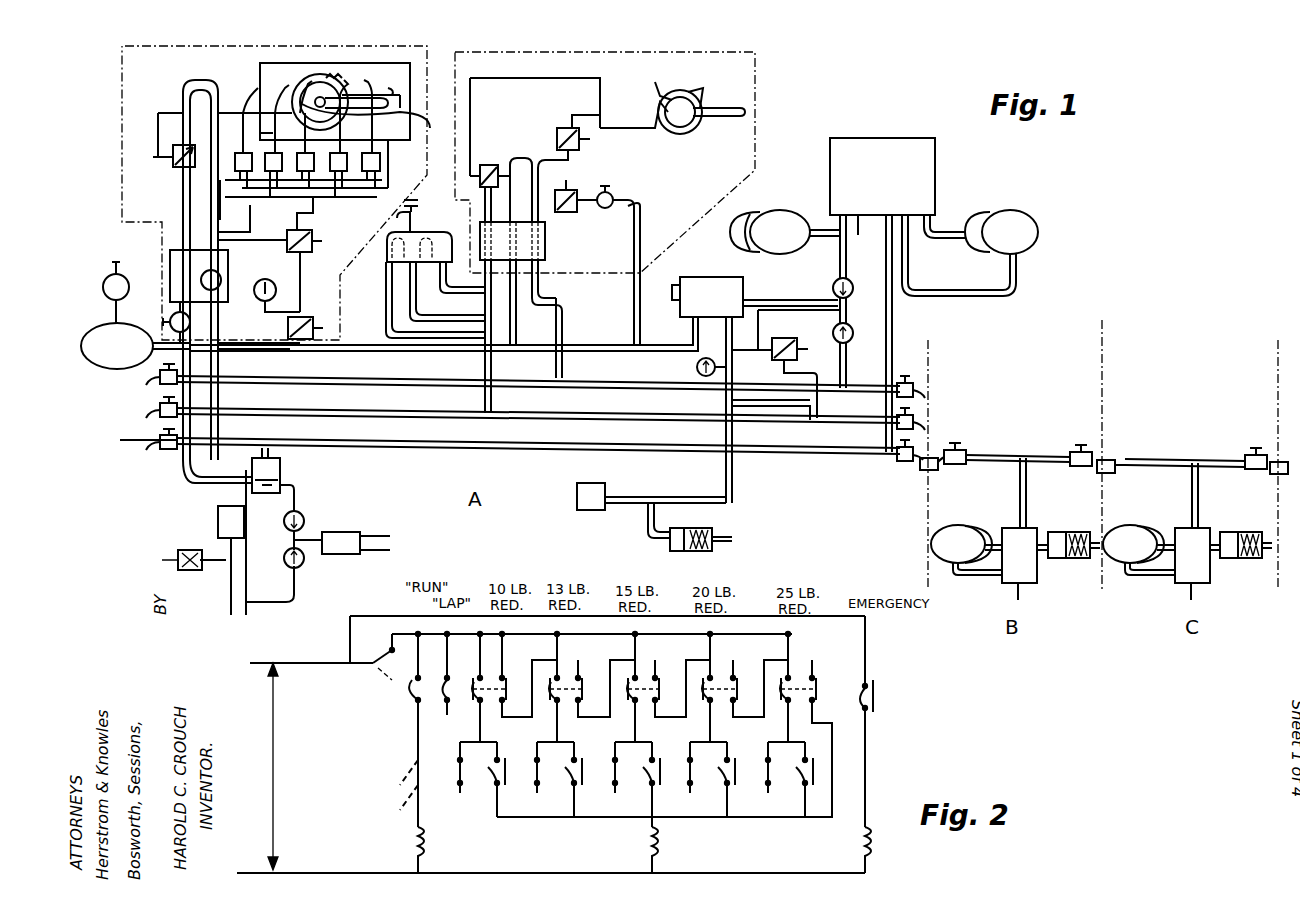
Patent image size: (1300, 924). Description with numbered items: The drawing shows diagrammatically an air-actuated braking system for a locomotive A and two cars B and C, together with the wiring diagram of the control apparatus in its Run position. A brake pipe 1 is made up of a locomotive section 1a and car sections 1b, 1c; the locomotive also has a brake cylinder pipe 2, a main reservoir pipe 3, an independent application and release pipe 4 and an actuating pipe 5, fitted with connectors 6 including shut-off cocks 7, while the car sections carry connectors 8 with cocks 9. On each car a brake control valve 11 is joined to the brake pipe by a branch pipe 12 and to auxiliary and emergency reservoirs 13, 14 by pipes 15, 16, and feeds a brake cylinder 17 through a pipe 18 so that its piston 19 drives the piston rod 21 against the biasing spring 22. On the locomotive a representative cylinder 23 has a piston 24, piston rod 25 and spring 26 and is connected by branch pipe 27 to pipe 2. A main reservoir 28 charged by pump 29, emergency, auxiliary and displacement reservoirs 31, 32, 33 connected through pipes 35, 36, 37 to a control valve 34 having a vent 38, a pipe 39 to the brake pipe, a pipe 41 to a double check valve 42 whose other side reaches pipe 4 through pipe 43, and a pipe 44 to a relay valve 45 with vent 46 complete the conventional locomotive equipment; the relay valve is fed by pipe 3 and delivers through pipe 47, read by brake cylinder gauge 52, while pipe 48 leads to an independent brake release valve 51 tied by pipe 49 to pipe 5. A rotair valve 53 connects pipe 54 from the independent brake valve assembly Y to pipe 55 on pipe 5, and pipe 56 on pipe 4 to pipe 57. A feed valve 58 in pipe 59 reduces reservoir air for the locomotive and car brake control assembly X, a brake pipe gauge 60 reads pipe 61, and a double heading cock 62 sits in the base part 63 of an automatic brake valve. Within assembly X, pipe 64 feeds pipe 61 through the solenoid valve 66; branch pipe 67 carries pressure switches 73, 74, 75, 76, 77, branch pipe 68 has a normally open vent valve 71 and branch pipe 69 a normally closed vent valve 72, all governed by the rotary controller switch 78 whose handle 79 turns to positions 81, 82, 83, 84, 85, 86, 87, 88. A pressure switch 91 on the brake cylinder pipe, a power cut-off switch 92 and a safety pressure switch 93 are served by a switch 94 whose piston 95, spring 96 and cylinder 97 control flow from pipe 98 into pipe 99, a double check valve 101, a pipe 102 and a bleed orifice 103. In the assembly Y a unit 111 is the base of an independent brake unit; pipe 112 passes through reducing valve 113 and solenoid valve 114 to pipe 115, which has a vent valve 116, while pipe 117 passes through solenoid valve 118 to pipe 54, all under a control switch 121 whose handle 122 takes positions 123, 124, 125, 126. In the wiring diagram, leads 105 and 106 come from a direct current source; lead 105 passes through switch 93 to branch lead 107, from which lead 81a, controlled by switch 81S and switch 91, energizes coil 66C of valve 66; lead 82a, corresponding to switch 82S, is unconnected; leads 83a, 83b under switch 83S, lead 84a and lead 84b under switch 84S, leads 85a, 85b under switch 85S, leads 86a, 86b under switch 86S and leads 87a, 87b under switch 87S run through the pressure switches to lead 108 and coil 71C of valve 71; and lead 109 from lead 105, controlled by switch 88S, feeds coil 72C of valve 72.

In FIG. 1, the brake pipe 1 is at (450, 452).
In FIG. 1, the brake pipe section 1a is at (536, 448).
In FIG. 1, the brake pipe section 1b is at (1008, 456).
In FIG. 1, the brake pipe section 1c is at (1186, 462).
In FIG. 1, the pipe 2 is at (680, 496).
In FIG. 1, the main reservoir pipe 3 is at (604, 352).
In FIG. 1, the pipe 4 is at (612, 384).
In FIG. 1, the pipe 5 is at (636, 418).
In FIG. 1, the hose 6 is at (146, 384).
In FIG. 1, the cut-out cock 7 is at (180, 386).
In FIG. 1, the hose coupling 8 is at (950, 466).
In FIG. 1, the angle cock 9 is at (966, 450).
In FIG. 1, the exhaust 11 is at (1024, 586).
In FIG. 1, the branch pipe 12 is at (1020, 490).
In FIG. 1, the auxiliary reservoir 13 is at (945, 548).
In FIG. 1, the triple valve 14 is at (1000, 536).
In FIG. 1, the pipe 15 is at (958, 576).
In FIG. 1, the pipe 16 is at (985, 560).
In FIG. 1, the brake cylinder 17 is at (1068, 560).
In FIG. 1, the pipe 18 is at (1046, 540).
In FIG. 1, the piston 19 is at (1060, 556).
In FIG. 1, the piston rod 21 is at (1096, 550).
In FIG. 1, the spring 22 is at (1076, 532).
In FIG. 1, the cylinder 23 is at (680, 552).
In FIG. 1, the piston 24 is at (688, 528).
In FIG. 1, the rod 25 is at (728, 536).
In FIG. 1, the spring 26 is at (704, 552).
In FIG. 1, the pipe 27 is at (645, 530).
In FIG. 1, the reservoir 28 is at (108, 362).
In FIG. 1, the pressure gauge 29 is at (104, 280).
In FIG. 1, the reservoir 31 is at (1030, 212).
In FIG. 1, the reservoir 32 is at (978, 212).
In FIG. 1, the reservoir 33 is at (776, 210).
In FIG. 1, the compressor 34 is at (884, 138).
In FIG. 1, the pipe 35 is at (975, 296).
In FIG. 1, the pipe 36 is at (940, 238).
In FIG. 1, the pipe 37 is at (816, 236).
In FIG. 1, the exhaust 38 is at (872, 215).
In FIG. 1, the pipe 39 is at (893, 316).
In FIG. 1, the pipe 41 is at (847, 254).
In FIG. 1, the check valve 42 is at (848, 292).
In FIG. 1, the check valve 43 is at (846, 344).
In FIG. 1, the pipe 44 is at (790, 296).
In FIG. 1, the brake valve 45 is at (706, 277).
In FIG. 1, the exhaust 46 is at (672, 300).
In FIG. 1, the pipe 47 is at (736, 462).
In FIG. 1, the pipe 48 is at (768, 322).
In FIG. 1, the pipe 49 is at (812, 400).
In FIG. 1, the valve 51 is at (775, 360).
In FIG. 1, the check valve 52 is at (697, 368).
In FIG. 1, the valve 53 is at (394, 266).
In FIG. 1, the pipe 54 is at (395, 297).
In FIG. 1, the pipe 55 is at (388, 318).
In FIG. 1, the pipe 56 is at (550, 328).
In FIG. 1, the pipe 57 is at (548, 290).
In FIG. 1, the valve 58 is at (172, 314).
In FIG. 1, the stem 59 is at (163, 322).
In FIG. 1, the check valve 60 is at (268, 279).
In FIG. 1, the pipe 61 is at (220, 360).
In FIG. 1, the valve 62 is at (221, 278).
In FIG. 1, the valve body 63 is at (170, 266).
In FIG. 1, the pipe 64 is at (200, 80).
In FIG. 1, the magnet valve 66 is at (176, 170).
In FIG. 1, the wiring 67 is at (226, 196).
In FIG. 1, the pipe 68 is at (250, 240).
In FIG. 1, the pipe 69 is at (262, 349).
In FIG. 1, the magnet valve 71 is at (308, 252).
In FIG. 1, the magnet valve 72 is at (300, 340).
In FIG. 1, the relay 73 is at (236, 153).
In FIG. 2, the relay 73 is at (497, 816).
In FIG. 1, the relay 74 is at (268, 158).
In FIG. 2, the relay 74 is at (574, 816).
In FIG. 1, the relay 75 is at (302, 158).
In FIG. 2, the relay 75 is at (652, 816).
In FIG. 1, the relay 76 is at (336, 158).
In FIG. 2, the relay 76 is at (727, 816).
In FIG. 1, the relay 77 is at (382, 162).
In FIG. 2, the relay 77 is at (805, 816).
In FIG. 1, the controller drum 78 is at (338, 114).
In FIG. 1, the lead 79 is at (430, 128).
In FIG. 1, the controller 81 is at (300, 110).
In FIG. 1, the contact 82 is at (250, 92).
In FIG. 1, the contact 83 is at (290, 88).
In FIG. 1, the contact 84 is at (300, 82).
In FIG. 1, the contact 85 is at (334, 76).
In FIG. 1, the contact 86 is at (350, 90).
In FIG. 1, the contact 87 is at (372, 92).
In FIG. 1, the contact 88 is at (380, 106).
In FIG. 1, the valve 91 is at (594, 483).
In FIG. 2, the valve 91 is at (412, 770).
In FIG. 1, the valve 92 is at (342, 538).
In FIG. 1, the valve 93 is at (218, 512).
In FIG. 2, the valve 93 is at (384, 660).
In FIG. 1, the valve 94 is at (282, 476).
In FIG. 1, the pipe 95 is at (256, 470).
In FIG. 1, the port 96 is at (266, 494).
In FIG. 1, the port 97 is at (280, 463).
In FIG. 1, the pipe 98 is at (184, 478).
In FIG. 1, the pipe 99 is at (300, 496).
In FIG. 1, the pipe 101 is at (288, 544).
In FIG. 1, the pipe 102 is at (230, 570).
In FIG. 1, the valve 103 is at (188, 550).
In FIG. 2, the conductor 105 is at (304, 670).
In FIG. 2, the conductor 106 is at (320, 873).
In FIG. 2, the conductor 107 is at (400, 622).
In FIG. 2, the conductor 108 is at (670, 819).
In FIG. 2, the conductor 109 is at (866, 650).
In FIG. 1, the valve 111 is at (545, 246).
In FIG. 1, the pipe 112 is at (642, 240).
In FIG. 1, the check valve 113 is at (614, 196).
In FIG. 1, the valve 114 is at (578, 208).
In FIG. 1, the pipe 115 is at (545, 162).
In FIG. 1, the valve 116 is at (560, 128).
In FIG. 1, the pipe 117 is at (500, 359).
In FIG. 1, the valve 118 is at (488, 160).
In FIG. 1, the drum 121 is at (692, 134).
In FIG. 1, the handle 122 is at (730, 120).
In FIG. 1, the drum 123 is at (672, 128).
In FIG. 1, the contact 124 is at (654, 118).
In FIG. 1, the contact 125 is at (672, 100).
In FIG. 1, the contact 126 is at (698, 100).
In FIG. 1, the controller unit X is at (118, 165).
In FIG. 1, the controller unit Y is at (760, 96).
In FIG. 2, the contact 81a is at (591, 652).
In FIG. 2, the switch 81S is at (412, 700).
In FIG. 2, the contact 82a is at (446, 644).
In FIG. 2, the switch 82S is at (446, 704).
In FIG. 2, the contact 83a is at (480, 650).
In FIG. 2, the contact 83b is at (502, 640).
In FIG. 2, the switch 83S is at (484, 710).
In FIG. 2, the contact 84a is at (556, 650).
In FIG. 2, the contact 84b is at (578, 668).
In FIG. 2, the switch 84S is at (560, 712).
In FIG. 2, the contact 85a is at (632, 644).
In FIG. 2, the contact 85b is at (658, 668).
In FIG. 2, the switch 85S is at (640, 712).
In FIG. 2, the contact 86a is at (710, 644).
In FIG. 2, the contact 86b is at (736, 668).
In FIG. 2, the switch 86S is at (716, 712).
In FIG. 2, the contact 87a is at (790, 648).
In FIG. 2, the contact 87b is at (814, 668).
In FIG. 2, the switch 87S is at (792, 712).
In FIG. 2, the switch 88S is at (870, 708).
In FIG. 2, the coil 66C is at (424, 850).
In FIG. 2, the coil 71C is at (658, 852).
In FIG. 2, the coil 72C is at (872, 850).